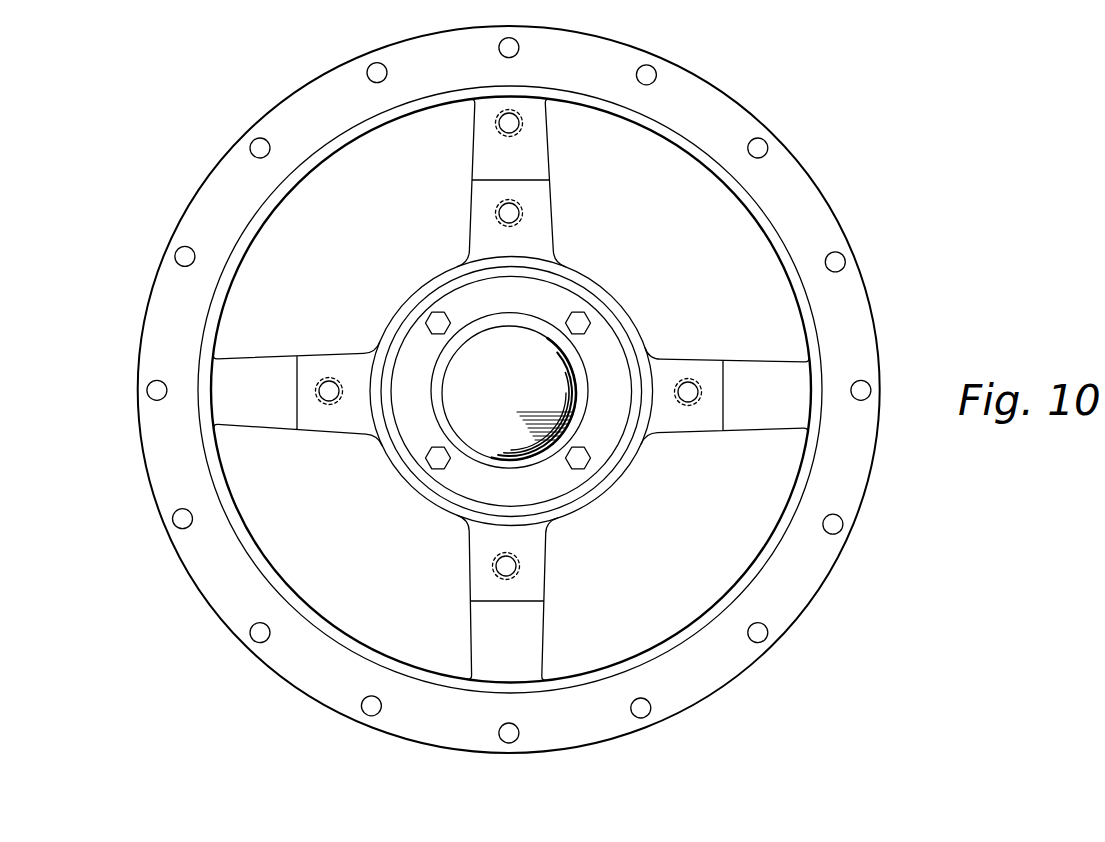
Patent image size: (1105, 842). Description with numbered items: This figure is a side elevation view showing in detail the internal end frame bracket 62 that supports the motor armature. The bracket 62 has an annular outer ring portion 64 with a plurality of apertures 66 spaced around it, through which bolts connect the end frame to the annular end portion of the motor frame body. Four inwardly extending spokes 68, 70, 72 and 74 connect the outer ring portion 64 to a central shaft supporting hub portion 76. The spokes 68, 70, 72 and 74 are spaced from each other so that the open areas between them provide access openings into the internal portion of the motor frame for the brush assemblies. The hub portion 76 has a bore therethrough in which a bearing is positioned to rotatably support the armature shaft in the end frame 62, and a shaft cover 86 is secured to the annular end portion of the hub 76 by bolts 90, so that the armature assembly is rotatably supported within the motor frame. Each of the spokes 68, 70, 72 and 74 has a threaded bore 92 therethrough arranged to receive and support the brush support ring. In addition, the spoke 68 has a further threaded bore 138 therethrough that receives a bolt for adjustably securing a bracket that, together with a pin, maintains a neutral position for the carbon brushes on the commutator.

The internal end frame bracket 62 is at (824, 178).
The annular outer ring portion 64 is at (873, 298).
The apertures 66 is at (513, 37).
The spoke 68 is at (547, 142).
The spoke 70 is at (268, 359).
The spoke 72 is at (546, 605).
The spoke 74 is at (751, 360).
The shaft supporting hub portion 76 is at (622, 322).
The shaft cover 86 is at (566, 478).
The bolts 90 is at (434, 316).
The threaded bores 92 is at (520, 213).
The threaded bore 138 is at (499, 123).